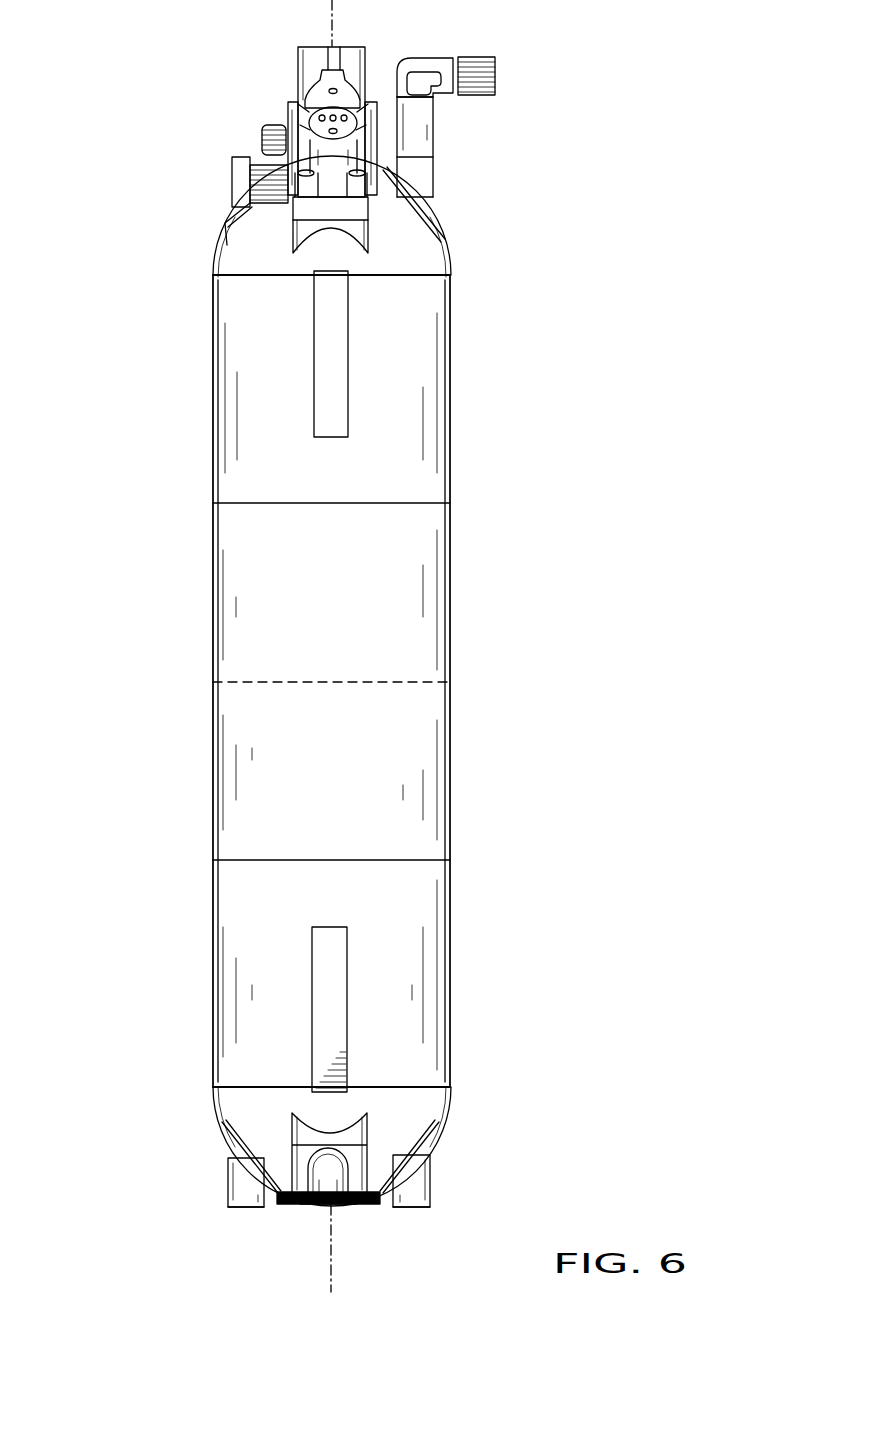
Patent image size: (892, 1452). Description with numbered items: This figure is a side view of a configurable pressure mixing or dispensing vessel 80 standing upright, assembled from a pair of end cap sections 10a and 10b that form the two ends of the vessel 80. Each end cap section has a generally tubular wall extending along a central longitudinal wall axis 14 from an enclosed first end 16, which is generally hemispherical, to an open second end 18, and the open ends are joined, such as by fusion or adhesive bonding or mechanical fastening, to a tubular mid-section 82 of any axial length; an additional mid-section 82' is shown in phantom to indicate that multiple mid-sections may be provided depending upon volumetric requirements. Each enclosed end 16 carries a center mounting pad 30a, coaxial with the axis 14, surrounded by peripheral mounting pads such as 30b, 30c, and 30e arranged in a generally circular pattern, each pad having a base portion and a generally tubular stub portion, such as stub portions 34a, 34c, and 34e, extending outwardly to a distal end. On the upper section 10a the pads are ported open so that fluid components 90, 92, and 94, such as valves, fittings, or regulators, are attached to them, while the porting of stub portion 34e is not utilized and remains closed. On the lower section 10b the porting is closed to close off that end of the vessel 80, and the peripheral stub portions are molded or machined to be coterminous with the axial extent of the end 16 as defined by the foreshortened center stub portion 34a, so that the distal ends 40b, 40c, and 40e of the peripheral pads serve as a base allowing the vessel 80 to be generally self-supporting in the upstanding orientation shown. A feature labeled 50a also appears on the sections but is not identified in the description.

The central longitudinal wall axis 14 is at (315, 44).
The fluid component 90 is at (350, 46).
The fluid component 94 is at (436, 133).
The stub portion 34e is at (232, 178).
The pressure vessel 80 is at (600, 238).
The enclosed first end 16 is at (405, 211).
The peripheral mounting pad 30c is at (445, 240).
The peripheral mounting pad 30e is at (224, 222).
The fluid component 92 is at (328, 165).
The peripheral mounting pad 30b is at (383, 238).
The end cap section 10a is at (497, 386).
The slot 50a is at (348, 358).
The open second end 18 is at (253, 503).
The tubular mid-section 82 is at (417, 681).
The tubular mid-section 82' is at (394, 719).
The end cap section 10b is at (483, 1038).
The stub portion 34c is at (430, 1187).
The distal end 40e is at (235, 1208).
The distal end 40c is at (420, 1208).
The center mounting pad 30a is at (273, 1200).
The center stub portion 34a is at (368, 1205).
The distal end 40b is at (340, 1205).